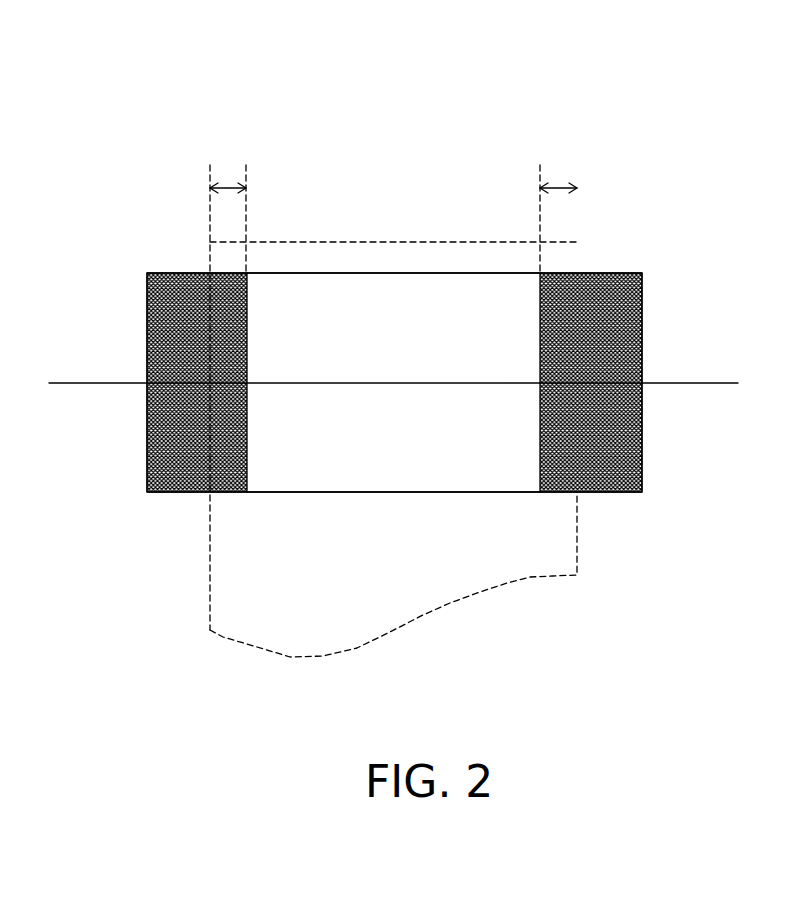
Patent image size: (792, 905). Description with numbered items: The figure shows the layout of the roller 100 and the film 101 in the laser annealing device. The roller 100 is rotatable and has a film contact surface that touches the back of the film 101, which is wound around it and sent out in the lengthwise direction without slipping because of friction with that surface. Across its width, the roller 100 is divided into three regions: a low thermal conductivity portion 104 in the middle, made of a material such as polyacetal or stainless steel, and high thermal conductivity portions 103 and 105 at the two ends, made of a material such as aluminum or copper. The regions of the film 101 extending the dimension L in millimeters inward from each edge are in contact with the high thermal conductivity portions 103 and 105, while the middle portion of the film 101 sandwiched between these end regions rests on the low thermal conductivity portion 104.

The roller 100 is at (147, 432).
The film 101 is at (208, 523).
The high thermal conductivity portion 103 is at (172, 298).
The low thermal conductivity portion 104 is at (478, 417).
The high thermal conductivity portion 105 is at (610, 315).
The dimension L is at (445, 157).